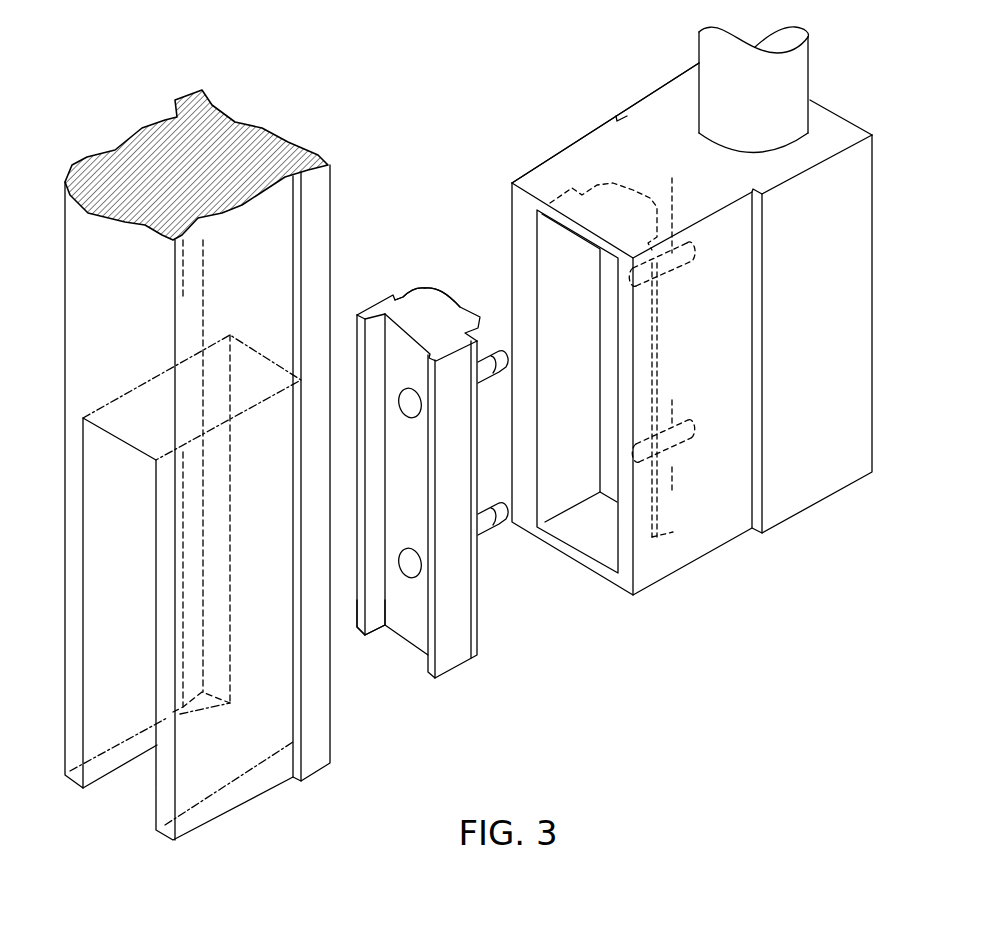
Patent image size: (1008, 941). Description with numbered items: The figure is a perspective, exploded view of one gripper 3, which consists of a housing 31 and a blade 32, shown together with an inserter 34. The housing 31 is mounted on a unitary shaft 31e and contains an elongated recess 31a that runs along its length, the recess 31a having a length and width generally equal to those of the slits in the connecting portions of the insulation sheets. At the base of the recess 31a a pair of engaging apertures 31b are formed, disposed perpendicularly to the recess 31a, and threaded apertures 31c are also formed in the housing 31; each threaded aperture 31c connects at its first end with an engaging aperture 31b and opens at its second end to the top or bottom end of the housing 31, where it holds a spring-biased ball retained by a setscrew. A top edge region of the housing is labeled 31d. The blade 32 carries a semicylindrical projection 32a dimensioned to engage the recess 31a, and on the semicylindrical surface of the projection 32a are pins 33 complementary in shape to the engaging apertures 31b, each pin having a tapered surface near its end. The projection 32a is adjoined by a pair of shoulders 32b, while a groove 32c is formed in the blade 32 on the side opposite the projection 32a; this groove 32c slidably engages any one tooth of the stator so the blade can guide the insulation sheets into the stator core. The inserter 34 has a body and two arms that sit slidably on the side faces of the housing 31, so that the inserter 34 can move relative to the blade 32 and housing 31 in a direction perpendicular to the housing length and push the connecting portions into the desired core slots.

The gripper 3 is at (860, 486).
The housing 31 is at (699, 334).
The elongated recess 31a is at (600, 528).
The engaging apertures 31b is at (682, 445).
The threaded apertures 31c is at (663, 173).
The top edge of housing 31d is at (512, 183).
The unitary shaft 31e is at (793, 90).
The blade 32 is at (428, 478).
The semicylindrical projection 32a is at (437, 300).
The shoulders 32b is at (393, 290).
The groove 32c is at (410, 630).
The pins 33 is at (497, 353).
The inserter 34 is at (83, 245).